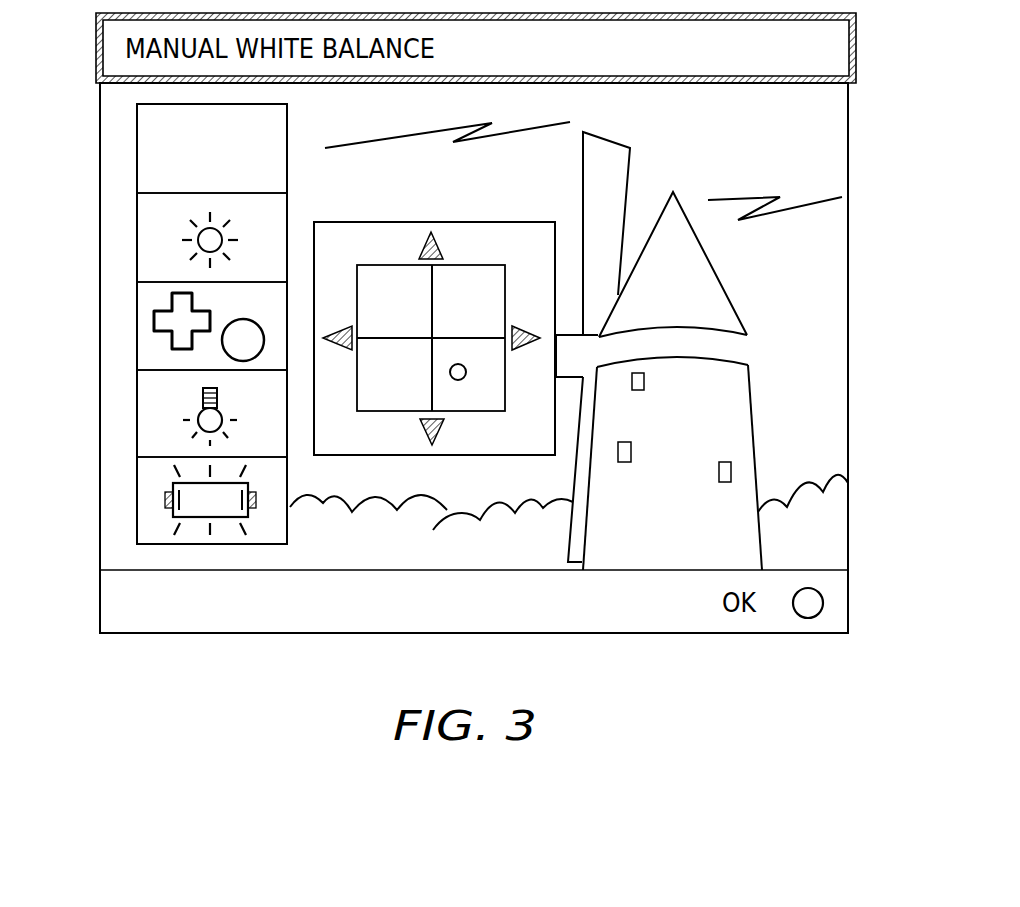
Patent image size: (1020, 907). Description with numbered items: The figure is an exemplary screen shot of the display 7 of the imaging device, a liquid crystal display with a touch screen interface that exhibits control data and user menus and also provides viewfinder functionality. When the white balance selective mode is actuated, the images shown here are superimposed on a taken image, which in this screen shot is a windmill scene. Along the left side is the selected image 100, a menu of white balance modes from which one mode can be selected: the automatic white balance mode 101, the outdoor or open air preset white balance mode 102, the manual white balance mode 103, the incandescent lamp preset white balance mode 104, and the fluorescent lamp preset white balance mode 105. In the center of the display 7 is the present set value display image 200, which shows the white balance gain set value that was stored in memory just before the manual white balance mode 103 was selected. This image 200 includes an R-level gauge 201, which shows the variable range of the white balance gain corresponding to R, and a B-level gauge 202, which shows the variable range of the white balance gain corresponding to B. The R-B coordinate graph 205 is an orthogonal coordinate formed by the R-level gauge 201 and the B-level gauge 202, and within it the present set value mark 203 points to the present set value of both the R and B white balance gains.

The display 7 is at (850, 128).
The selected image 100 is at (128, 134).
The automatic white balance (AWB) mode 101 is at (137, 167).
The outdoor mode 102 is at (137, 253).
The manual white balance (MWB) mode 103 is at (137, 345).
The incandescent lamp PWB mode 104 is at (137, 440).
The fluorescent lamp PWB mode 105 is at (137, 530).
The present set value display image 200 is at (426, 216).
The R-level gauge 201 is at (433, 312).
The B-level gauge 202 is at (400, 338).
The present set value mark 203 is at (464, 378).
The R-B coordinate graph 205 is at (395, 380).